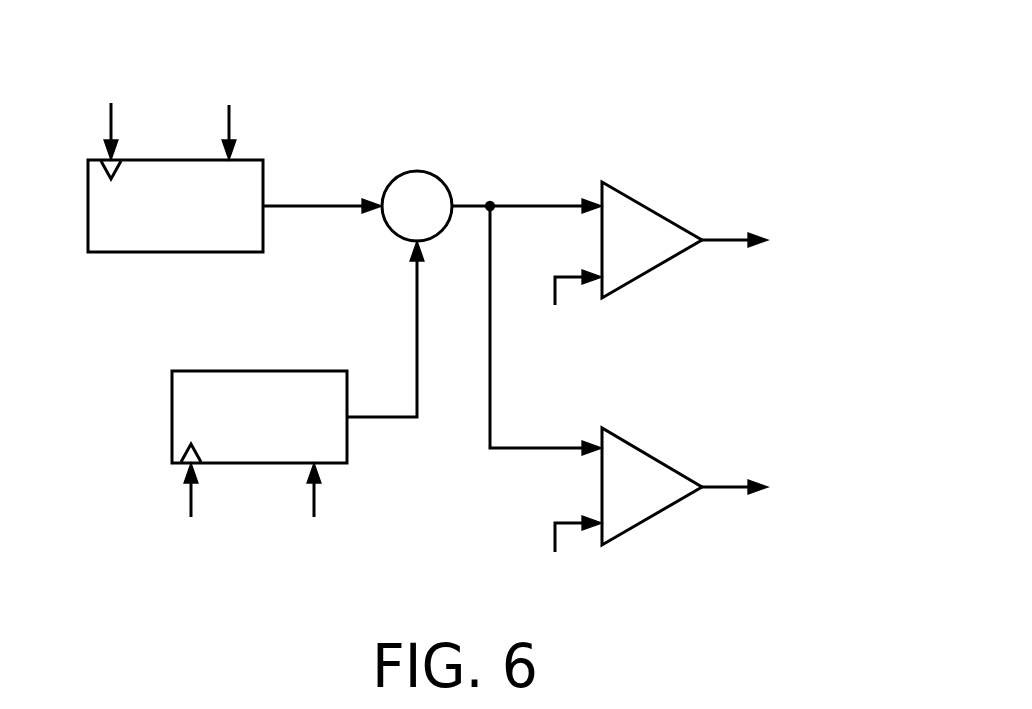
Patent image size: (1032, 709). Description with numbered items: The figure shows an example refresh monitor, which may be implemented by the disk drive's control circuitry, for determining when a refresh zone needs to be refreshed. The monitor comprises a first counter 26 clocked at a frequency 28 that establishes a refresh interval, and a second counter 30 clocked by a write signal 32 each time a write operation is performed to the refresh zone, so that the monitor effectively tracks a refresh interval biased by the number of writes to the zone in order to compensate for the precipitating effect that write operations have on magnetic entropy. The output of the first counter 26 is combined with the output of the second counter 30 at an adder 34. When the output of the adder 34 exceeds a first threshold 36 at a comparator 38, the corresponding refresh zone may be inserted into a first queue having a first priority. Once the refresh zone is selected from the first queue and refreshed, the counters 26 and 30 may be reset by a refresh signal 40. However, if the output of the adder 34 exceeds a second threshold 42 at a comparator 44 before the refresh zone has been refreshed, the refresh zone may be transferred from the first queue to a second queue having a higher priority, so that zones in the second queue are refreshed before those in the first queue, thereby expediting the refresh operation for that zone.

The first counter 26 is at (175, 252).
The frequency 28 is at (111, 122).
The second counter 30 is at (260, 371).
The write signal 32 is at (191, 497).
The adder 34 is at (415, 170).
The first threshold 36 is at (567, 276).
The comparator 38 is at (655, 205).
The refresh signal 40 is at (229, 120).
The second threshold 42 is at (567, 522).
The comparator 44 is at (655, 452).